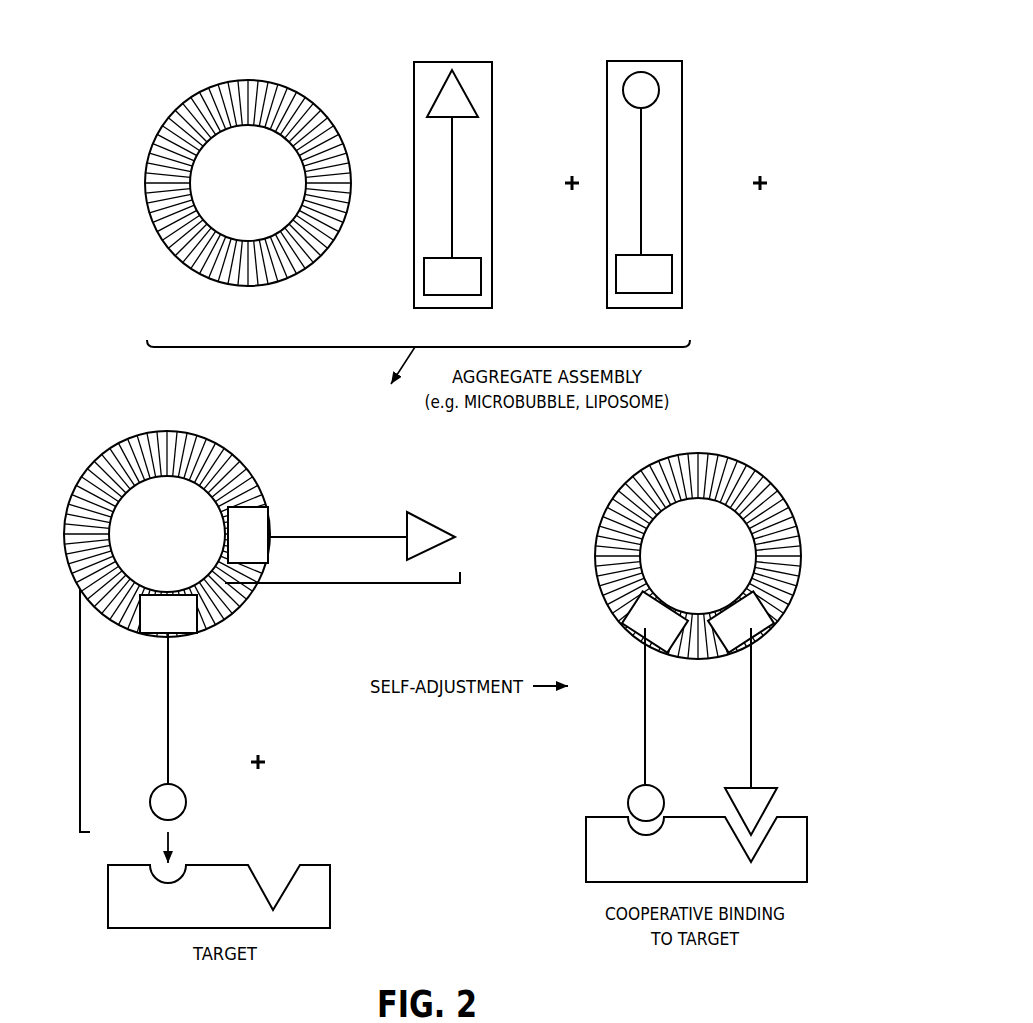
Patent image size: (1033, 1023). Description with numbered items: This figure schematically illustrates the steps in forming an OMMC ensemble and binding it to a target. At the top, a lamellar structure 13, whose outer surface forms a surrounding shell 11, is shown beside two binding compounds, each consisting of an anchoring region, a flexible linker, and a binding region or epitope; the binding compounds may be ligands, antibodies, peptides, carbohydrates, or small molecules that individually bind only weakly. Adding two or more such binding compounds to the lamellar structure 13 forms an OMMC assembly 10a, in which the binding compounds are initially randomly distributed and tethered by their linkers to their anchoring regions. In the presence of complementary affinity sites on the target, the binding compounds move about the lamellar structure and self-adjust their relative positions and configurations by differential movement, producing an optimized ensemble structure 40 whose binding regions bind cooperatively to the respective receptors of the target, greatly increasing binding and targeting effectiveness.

The surrounding shell 11 is at (303, 94).
The lamellar structure 13 is at (315, 122).
The OMMC assembly 10a is at (281, 454).
The optimized ensemble structure 40 is at (805, 476).